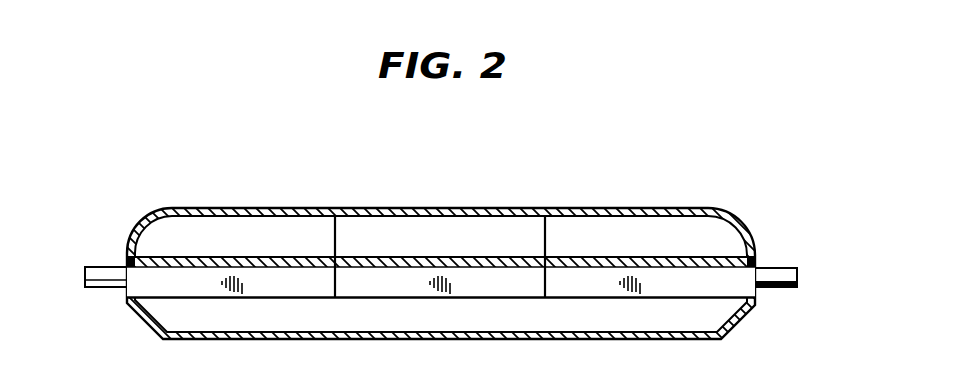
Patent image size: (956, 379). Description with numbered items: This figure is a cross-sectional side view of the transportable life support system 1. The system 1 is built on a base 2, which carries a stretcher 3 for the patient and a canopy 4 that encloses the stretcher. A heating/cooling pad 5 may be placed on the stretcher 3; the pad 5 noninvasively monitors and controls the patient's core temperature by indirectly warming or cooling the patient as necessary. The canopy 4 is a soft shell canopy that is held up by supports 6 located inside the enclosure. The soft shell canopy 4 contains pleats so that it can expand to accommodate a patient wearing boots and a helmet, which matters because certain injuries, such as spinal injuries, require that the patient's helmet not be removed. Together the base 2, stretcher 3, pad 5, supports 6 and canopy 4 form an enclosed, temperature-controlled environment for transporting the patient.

The transportable life support system 1 is at (474, 222).
The base 2 is at (740, 320).
The stretcher 3 is at (783, 275).
The canopy 4 is at (467, 207).
The heating/cooling pad 5 is at (727, 252).
The supports 6 is at (335, 242).